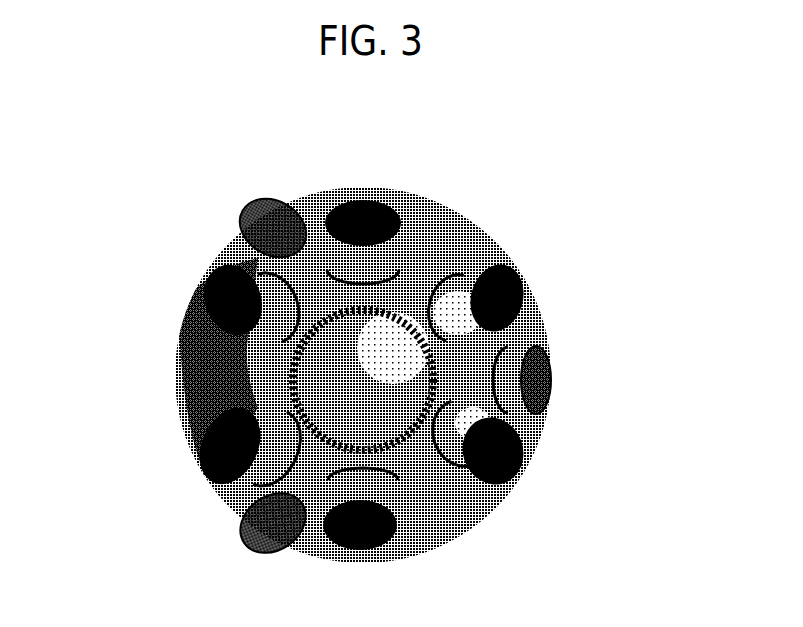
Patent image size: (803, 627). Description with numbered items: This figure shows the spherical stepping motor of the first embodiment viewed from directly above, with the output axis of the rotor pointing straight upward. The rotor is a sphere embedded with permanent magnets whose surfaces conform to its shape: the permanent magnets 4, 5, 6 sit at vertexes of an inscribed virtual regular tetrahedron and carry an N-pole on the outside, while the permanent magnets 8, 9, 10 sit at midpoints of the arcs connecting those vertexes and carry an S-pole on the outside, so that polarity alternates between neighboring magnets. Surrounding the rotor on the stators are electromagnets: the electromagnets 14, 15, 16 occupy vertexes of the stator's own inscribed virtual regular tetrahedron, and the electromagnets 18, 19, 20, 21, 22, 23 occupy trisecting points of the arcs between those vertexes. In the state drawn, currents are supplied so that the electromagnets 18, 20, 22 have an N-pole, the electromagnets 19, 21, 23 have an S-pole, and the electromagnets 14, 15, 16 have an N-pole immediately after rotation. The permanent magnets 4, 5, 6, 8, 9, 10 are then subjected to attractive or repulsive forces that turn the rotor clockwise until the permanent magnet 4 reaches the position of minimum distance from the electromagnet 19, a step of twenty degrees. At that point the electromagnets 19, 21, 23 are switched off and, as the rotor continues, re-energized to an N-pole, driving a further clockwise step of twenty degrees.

The permanent magnet 4 is at (465, 360).
The permanent magnet 5 is at (302, 277).
The permanent magnet 6 is at (308, 470).
The permanent magnet 8 is at (417, 283).
The permanent magnet 9 is at (257, 372).
The permanent magnet 10 is at (397, 450).
The electromagnet 14 is at (532, 372).
The electromagnet 15 is at (255, 180).
The electromagnet 16 is at (262, 530).
The electromagnet 18 is at (505, 275).
The electromagnet 19 is at (370, 197).
The electromagnet 20 is at (200, 282).
The electromagnet 21 is at (212, 453).
The electromagnet 22 is at (360, 543).
The electromagnet 23 is at (507, 457).